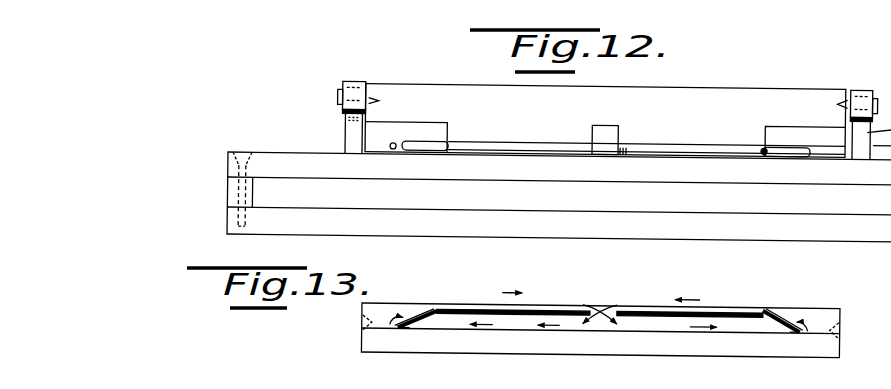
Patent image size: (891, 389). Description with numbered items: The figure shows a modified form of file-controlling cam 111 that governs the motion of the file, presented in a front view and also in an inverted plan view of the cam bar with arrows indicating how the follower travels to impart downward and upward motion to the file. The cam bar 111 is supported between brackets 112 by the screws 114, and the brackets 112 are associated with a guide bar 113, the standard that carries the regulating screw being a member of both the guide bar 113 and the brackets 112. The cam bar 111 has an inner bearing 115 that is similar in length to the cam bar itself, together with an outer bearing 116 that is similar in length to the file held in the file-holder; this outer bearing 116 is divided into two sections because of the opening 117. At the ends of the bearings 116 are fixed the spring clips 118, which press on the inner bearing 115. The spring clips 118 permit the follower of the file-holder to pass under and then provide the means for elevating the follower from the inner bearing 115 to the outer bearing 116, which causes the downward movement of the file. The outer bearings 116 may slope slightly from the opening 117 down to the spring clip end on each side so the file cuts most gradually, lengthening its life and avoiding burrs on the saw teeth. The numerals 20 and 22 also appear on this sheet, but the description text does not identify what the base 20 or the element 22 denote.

In FIG. 12, the base plate 20 is at (473, 227).
In FIG. 12, the dowel pin 22 is at (226, 187).
In FIG. 12, the file-controlling cam 111 is at (700, 83).
In FIG. 13, the file-controlling cam 111 is at (522, 348).
In FIG. 12, the brackets 112 is at (348, 125).
In FIG. 12, the guide bar 113 is at (517, 170).
In FIG. 12, the screws 114 is at (355, 79).
In FIG. 12, the inner bearing 115 is at (392, 142).
In FIG. 13, the inner bearing 115 is at (427, 326).
In FIG. 12, the outer bearing 116 is at (519, 143).
In FIG. 13, the outer bearing 116 is at (492, 307).
In FIG. 12, the opening 117 is at (604, 125).
In FIG. 13, the opening 117 is at (602, 305).
In FIG. 12, the spring clips 118 is at (422, 147).
In FIG. 13, the spring clips 118 is at (432, 315).